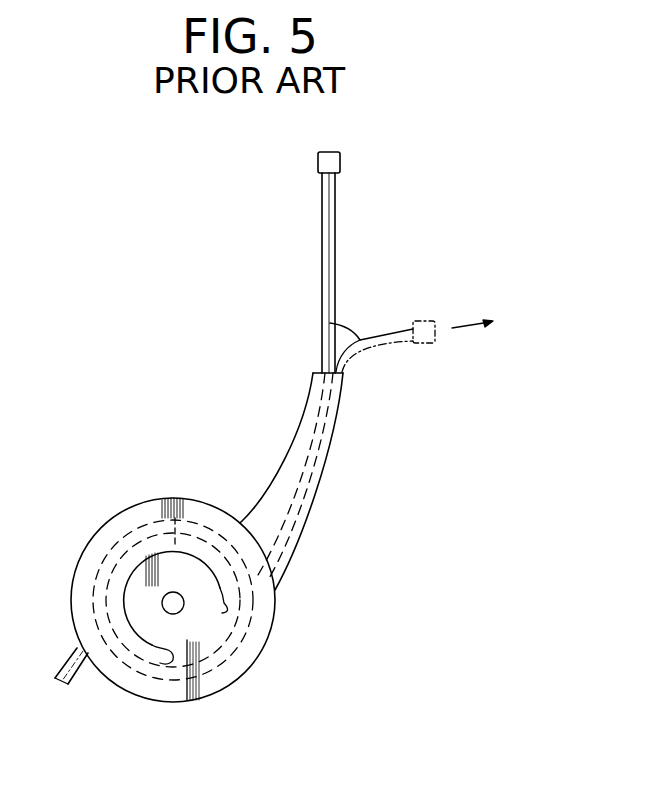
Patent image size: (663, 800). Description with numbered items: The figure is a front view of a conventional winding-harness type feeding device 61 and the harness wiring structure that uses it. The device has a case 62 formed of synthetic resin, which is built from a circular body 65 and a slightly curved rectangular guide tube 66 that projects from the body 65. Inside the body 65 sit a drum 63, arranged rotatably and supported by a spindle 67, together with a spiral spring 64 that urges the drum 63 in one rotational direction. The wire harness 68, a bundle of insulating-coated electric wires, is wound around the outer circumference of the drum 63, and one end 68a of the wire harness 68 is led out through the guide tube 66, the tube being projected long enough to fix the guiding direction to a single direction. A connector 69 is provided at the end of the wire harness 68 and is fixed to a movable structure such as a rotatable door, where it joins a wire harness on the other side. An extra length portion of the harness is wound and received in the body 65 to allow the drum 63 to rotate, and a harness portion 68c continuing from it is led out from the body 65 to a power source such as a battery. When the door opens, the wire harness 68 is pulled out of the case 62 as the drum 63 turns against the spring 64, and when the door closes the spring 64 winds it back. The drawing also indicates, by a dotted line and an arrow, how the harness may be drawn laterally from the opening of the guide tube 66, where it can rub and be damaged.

The feeding device 61 is at (125, 273).
The case 62 is at (281, 599).
The drum 63 is at (234, 651).
The spiral spring 64 is at (152, 652).
The circular body 65 is at (217, 688).
The guide tube 66 is at (318, 489).
The spindle 67 is at (181, 611).
The wire harness 68 is at (334, 323).
The one end of the wire harness 68a is at (336, 267).
The harness portion 68c is at (70, 685).
The connector 69 is at (341, 162).